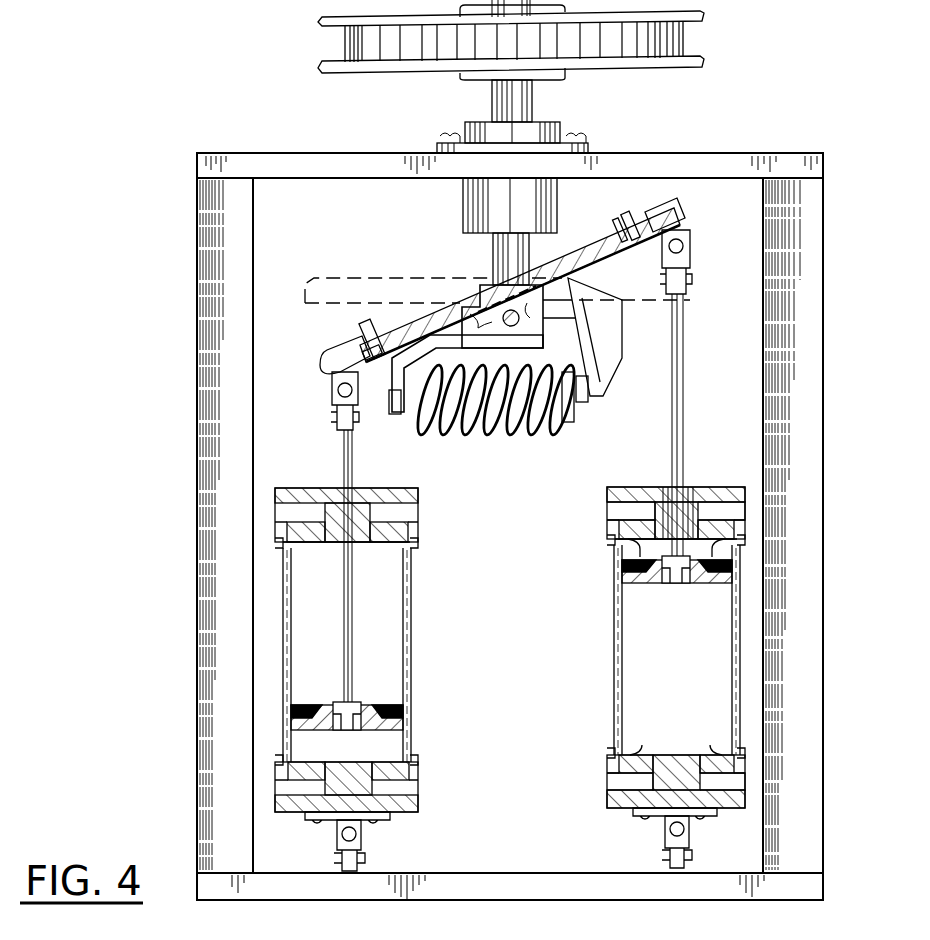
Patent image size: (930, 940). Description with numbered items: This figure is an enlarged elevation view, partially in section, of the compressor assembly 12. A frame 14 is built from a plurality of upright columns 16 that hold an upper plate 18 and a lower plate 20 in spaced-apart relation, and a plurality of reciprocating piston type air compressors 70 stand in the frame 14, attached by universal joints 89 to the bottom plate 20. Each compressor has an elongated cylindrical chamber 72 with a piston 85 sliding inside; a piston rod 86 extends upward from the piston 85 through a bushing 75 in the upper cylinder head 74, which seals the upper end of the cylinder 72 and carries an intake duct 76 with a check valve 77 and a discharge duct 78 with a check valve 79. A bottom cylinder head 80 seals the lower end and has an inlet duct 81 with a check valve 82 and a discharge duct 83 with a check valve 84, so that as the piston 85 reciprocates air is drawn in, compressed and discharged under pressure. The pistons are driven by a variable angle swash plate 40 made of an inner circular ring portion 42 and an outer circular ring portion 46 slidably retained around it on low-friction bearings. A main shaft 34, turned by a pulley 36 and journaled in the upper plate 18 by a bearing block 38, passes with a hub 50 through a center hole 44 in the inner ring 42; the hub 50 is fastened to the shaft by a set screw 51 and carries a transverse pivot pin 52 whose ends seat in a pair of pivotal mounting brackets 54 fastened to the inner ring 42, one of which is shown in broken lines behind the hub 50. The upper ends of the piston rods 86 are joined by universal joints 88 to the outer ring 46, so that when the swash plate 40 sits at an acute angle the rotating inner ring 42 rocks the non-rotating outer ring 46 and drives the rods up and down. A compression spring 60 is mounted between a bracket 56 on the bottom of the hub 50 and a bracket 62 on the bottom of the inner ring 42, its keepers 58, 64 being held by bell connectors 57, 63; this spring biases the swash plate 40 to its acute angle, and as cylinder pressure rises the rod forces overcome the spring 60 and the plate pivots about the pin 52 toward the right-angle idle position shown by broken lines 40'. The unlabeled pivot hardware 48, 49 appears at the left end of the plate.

The compressor assembly 12 is at (212, 133).
The frame 14 is at (195, 378).
The upright columns 16 is at (197, 472).
The upper plate 18 is at (280, 152).
The lower plate 20 is at (405, 873).
The main shaft 34 is at (533, 105).
The pulley 36 is at (602, 72).
The bearing block 38 is at (465, 127).
The variable angle swash plate 40 is at (679, 207).
The swash plate right-angle position 40' is at (477, 267).
The inner circular ring portion 42 is at (572, 245).
The center hole 44 is at (470, 300).
The outer circular ring portion 46 is at (325, 352).
The bolt 48 is at (358, 325).
The nut 49 is at (352, 340).
The hub 50 is at (490, 285).
The set screw 51 is at (600, 318).
The pivot pin 52 is at (600, 338).
The pivotal mounting brackets 54 is at (605, 356).
The mounting bracket 56 is at (332, 395).
The bell connector 57 is at (416, 427).
The keeper 58 is at (416, 433).
The compression spring 60 is at (496, 421).
The mounting bracket 62 is at (600, 368).
The bell connector 63 is at (585, 392).
The keeper 64 is at (575, 420).
The reciprocating piston type air compressors 70 is at (418, 490).
The cylindrical chamber 72 is at (615, 648).
The upper cylinder head 74 is at (700, 487).
The bushing 75 is at (685, 487).
The intake duct 76 is at (730, 515).
The check valve 77 is at (725, 540).
The discharge duct 78 is at (625, 505).
The check valve 79 is at (640, 545).
The bottom cylinder head 80 is at (622, 812).
The inlet duct 81 is at (730, 790).
The check valve 82 is at (702, 755).
The discharge duct 83 is at (625, 780).
The check valve 84 is at (640, 755).
The piston 85 is at (640, 583).
The piston rod 86 is at (685, 370).
The universal joints 88 is at (692, 252).
The universal joints 89 is at (692, 840).